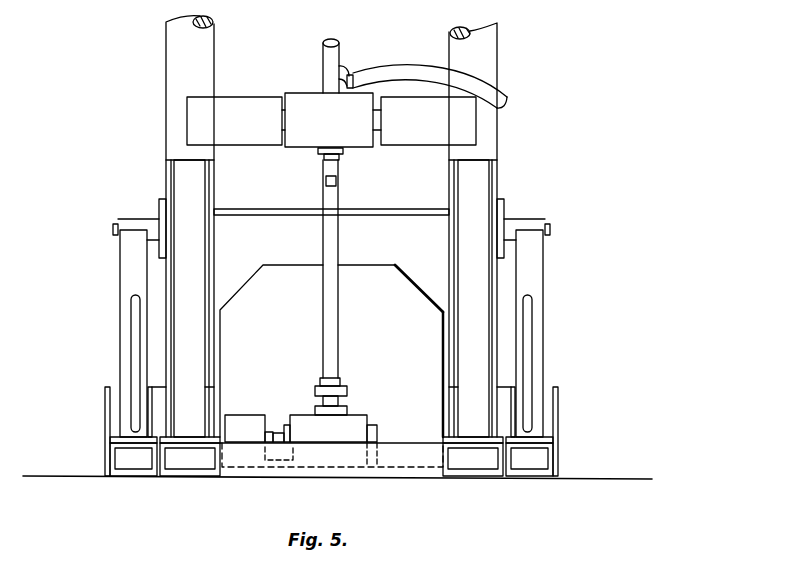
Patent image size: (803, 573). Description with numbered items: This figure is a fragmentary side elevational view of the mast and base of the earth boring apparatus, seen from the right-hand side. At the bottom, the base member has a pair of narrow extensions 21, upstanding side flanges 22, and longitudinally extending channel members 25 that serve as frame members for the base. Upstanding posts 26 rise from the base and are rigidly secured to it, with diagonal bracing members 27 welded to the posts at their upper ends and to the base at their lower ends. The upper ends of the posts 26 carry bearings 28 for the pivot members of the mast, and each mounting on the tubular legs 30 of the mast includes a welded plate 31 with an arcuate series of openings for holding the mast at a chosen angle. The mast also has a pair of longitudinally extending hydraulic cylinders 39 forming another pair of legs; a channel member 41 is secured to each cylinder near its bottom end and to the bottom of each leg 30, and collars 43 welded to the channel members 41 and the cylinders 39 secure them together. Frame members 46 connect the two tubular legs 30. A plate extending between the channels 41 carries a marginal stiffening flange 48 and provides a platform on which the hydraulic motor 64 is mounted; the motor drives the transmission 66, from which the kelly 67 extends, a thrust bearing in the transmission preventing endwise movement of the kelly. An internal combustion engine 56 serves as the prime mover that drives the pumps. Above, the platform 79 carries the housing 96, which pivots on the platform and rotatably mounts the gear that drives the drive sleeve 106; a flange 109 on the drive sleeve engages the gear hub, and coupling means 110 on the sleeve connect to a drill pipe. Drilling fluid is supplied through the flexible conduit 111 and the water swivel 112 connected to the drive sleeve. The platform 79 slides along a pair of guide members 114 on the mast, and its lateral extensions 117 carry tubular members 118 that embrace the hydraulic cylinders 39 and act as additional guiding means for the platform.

The tubular member 118 is at (178, 64).
The platform 79 is at (226, 108).
The housing 96 is at (297, 103).
The water swivel 112 is at (343, 80).
The flexible conduit 111 is at (476, 76).
The lateral extension 117 is at (195, 125).
The tubular leg 30 is at (172, 180).
The plate 31 is at (158, 211).
The bearing 28 is at (132, 222).
The upstanding post 26 is at (132, 283).
The diagonal bracing member 27 is at (134, 316).
The guide member 114 is at (207, 203).
The frame member 46 is at (405, 212).
The hydraulic cylinder 39 is at (194, 292).
The internal combustion engine 56 is at (395, 265).
The kelly 67 is at (330, 322).
The flange 109 is at (343, 150).
The drive sleeve 106 is at (329, 160).
The coupling means 110 is at (340, 173).
The upstanding side flange 22 is at (106, 406).
The narrow extension 21 is at (112, 440).
The channel member 25 is at (113, 460).
The channel member 41 is at (183, 448).
The collar 43 is at (198, 440).
The hydraulic motor 64 is at (259, 420).
The transmission 66 is at (352, 426).
The marginal stiffening flange 48 is at (395, 449).